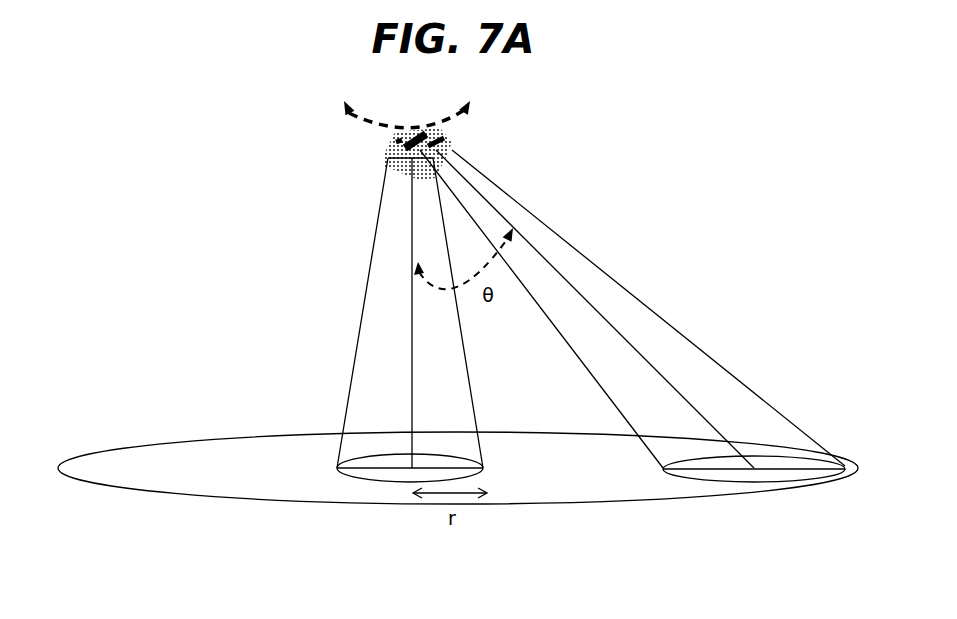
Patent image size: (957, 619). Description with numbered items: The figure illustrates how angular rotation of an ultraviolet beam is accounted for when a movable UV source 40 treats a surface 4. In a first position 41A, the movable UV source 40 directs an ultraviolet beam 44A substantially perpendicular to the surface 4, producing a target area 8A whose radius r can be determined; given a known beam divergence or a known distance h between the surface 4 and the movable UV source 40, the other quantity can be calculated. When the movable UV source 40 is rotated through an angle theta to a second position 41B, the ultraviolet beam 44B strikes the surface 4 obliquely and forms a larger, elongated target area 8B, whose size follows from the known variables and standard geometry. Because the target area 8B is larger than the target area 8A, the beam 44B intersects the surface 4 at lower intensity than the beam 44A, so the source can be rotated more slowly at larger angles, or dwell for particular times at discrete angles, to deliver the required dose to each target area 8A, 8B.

The surface 4 is at (177, 457).
The target area 8A is at (377, 482).
The target area 8B is at (720, 482).
The movable UV source 40 is at (386, 107).
The first position 41A is at (388, 154).
The second position 41B is at (448, 139).
The ultraviolet beam 44A is at (372, 256).
The ultraviolet beam 44B is at (612, 281).